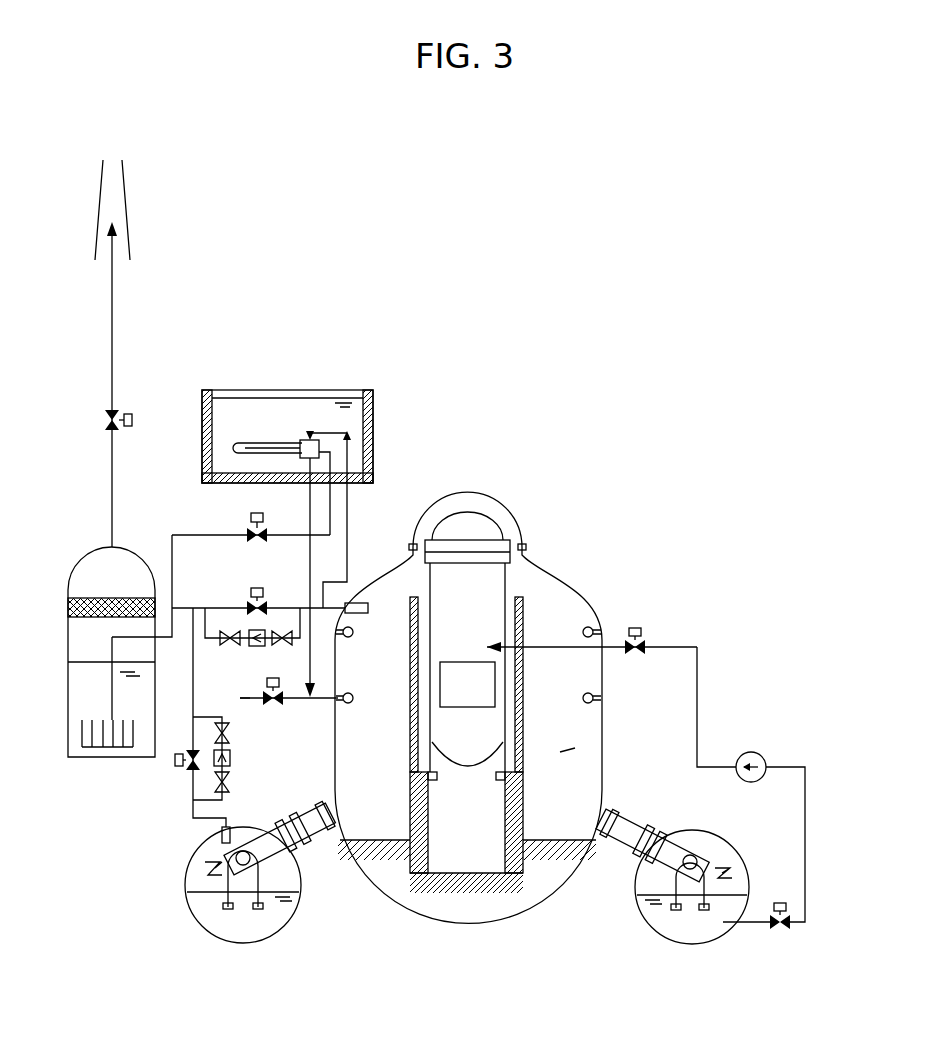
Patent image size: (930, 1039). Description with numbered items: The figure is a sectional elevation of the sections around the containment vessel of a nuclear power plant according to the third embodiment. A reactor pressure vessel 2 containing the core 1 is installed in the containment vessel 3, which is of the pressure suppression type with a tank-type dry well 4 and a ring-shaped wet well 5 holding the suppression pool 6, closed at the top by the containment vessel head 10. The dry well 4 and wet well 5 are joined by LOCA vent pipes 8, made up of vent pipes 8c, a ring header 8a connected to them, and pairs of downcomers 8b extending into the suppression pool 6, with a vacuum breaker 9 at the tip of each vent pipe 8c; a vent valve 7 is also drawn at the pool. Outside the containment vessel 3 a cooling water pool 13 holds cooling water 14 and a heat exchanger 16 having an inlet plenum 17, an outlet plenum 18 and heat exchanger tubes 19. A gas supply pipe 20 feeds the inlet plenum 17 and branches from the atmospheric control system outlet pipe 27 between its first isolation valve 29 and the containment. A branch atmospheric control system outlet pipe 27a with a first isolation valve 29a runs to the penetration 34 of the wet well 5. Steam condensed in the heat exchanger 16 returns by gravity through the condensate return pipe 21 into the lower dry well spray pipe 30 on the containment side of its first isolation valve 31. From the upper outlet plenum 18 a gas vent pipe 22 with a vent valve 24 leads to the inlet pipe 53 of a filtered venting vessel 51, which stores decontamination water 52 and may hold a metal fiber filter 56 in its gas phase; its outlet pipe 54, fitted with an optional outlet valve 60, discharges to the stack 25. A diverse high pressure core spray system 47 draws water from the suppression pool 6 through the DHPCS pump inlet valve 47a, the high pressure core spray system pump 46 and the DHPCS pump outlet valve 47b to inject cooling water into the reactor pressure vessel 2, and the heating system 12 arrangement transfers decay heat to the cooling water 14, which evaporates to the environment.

The core 1 is at (467, 662).
The reactor pressure vessel 2 is at (505, 595).
The containment vessel 3 is at (590, 607).
The dry well 4 is at (565, 748).
The wet well 5 is at (238, 945).
The suppression pool 6 is at (205, 905).
The vent valve 7 is at (205, 870).
The LOCA vent pipes 8 is at (322, 855).
The ring header 8a is at (688, 865).
The downcomers 8b is at (262, 880).
The vent pipes 8c is at (670, 875).
The vacuum breaker 9 is at (717, 880).
The containment vessel head 10 is at (490, 492).
The heating system 12 is at (337, 278).
The cooling water pool 13 is at (373, 412).
The cooling water 14 is at (320, 400).
The heat exchanger 16 is at (265, 422).
The inlet plenum 17 is at (308, 440).
The outlet plenum 18 is at (302, 470).
The heat exchanger tubes 19 is at (252, 445).
The gas supply pipe 20 is at (350, 545).
The condensate return pipe 21 is at (316, 700).
The gas vent pipe 22 is at (232, 533).
The vent valve 24 is at (255, 518).
The stack 25 is at (128, 236).
The atmospheric control system outlet pipe 27 is at (290, 605).
The atmospheric control system outlet pipe 27a is at (193, 790).
The first isolation valve 29 is at (252, 592).
The first isolation valve 29a is at (180, 760).
The lower dry well spray pipe 30 is at (283, 690).
The first isolation valve 31 is at (273, 705).
The penetration 34 is at (222, 835).
The high pressure core spray system pump 46 is at (752, 752).
The diverse high pressure core spray system 47 is at (745, 655).
The DHPCS pump inlet valve 47a is at (780, 935).
The DHPCS pump outlet valve 47b is at (648, 638).
The filtered venting vessel 51 is at (118, 545).
The decontamination water 52 is at (85, 695).
The inlet pipe 53 is at (170, 580).
The outlet pipe 54 is at (112, 385).
The metal fiber filter 56 is at (100, 600).
The outlet valve 60 is at (105, 418).